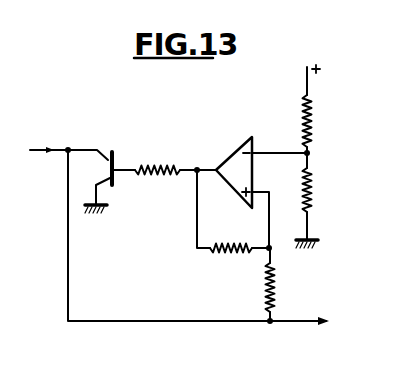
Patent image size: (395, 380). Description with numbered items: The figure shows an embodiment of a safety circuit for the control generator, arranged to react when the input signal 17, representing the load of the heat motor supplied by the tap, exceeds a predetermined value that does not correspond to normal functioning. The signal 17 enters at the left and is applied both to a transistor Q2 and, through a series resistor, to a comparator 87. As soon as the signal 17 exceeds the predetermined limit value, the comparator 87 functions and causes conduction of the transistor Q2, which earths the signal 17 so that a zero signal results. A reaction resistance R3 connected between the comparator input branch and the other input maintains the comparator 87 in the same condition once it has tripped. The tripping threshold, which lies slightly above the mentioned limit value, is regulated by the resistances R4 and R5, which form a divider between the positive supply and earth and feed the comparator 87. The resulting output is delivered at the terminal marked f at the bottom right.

The signal 17 is at (40, 149).
The transistor Q2 is at (101, 171).
The comparator 87 is at (232, 170).
The reaction resistance R3 is at (234, 211).
The resistance R4 is at (320, 116).
The resistance R5 is at (317, 208).
The output signal f is at (299, 313).